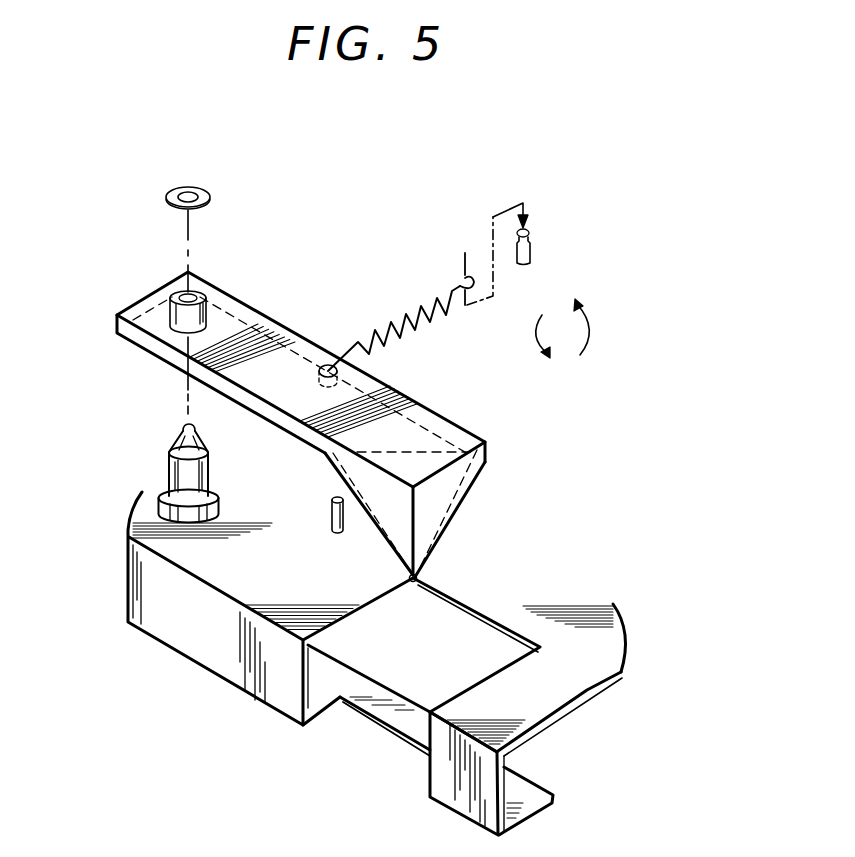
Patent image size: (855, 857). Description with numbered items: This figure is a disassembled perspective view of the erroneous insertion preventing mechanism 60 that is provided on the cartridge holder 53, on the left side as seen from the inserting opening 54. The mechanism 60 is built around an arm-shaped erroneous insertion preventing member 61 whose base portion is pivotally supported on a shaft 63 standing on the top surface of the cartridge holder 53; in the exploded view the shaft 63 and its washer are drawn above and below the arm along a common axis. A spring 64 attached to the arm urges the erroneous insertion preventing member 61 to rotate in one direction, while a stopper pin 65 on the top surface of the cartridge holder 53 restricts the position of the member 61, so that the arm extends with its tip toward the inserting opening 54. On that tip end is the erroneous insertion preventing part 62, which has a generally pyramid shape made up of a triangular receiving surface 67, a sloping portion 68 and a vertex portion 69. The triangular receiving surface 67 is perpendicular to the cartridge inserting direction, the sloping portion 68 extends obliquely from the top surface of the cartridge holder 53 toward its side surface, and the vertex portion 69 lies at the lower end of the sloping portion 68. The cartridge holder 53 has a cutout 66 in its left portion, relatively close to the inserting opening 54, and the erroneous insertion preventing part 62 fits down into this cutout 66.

The cartridge holder 53 is at (605, 637).
The inserting opening 54 is at (582, 728).
The erroneous insertion preventing mechanism 60 is at (476, 188).
The erroneous insertion preventing member 61 is at (413, 402).
The erroneous insertion preventing part 62 is at (455, 535).
The shaft 63 is at (200, 478).
The spring 64 is at (408, 312).
The stopper pin 65 is at (331, 523).
The cutout 66 is at (480, 647).
The triangular receiving surface 67 is at (438, 507).
The sloping portion 68 is at (478, 485).
The vertex portion 69 is at (414, 583).